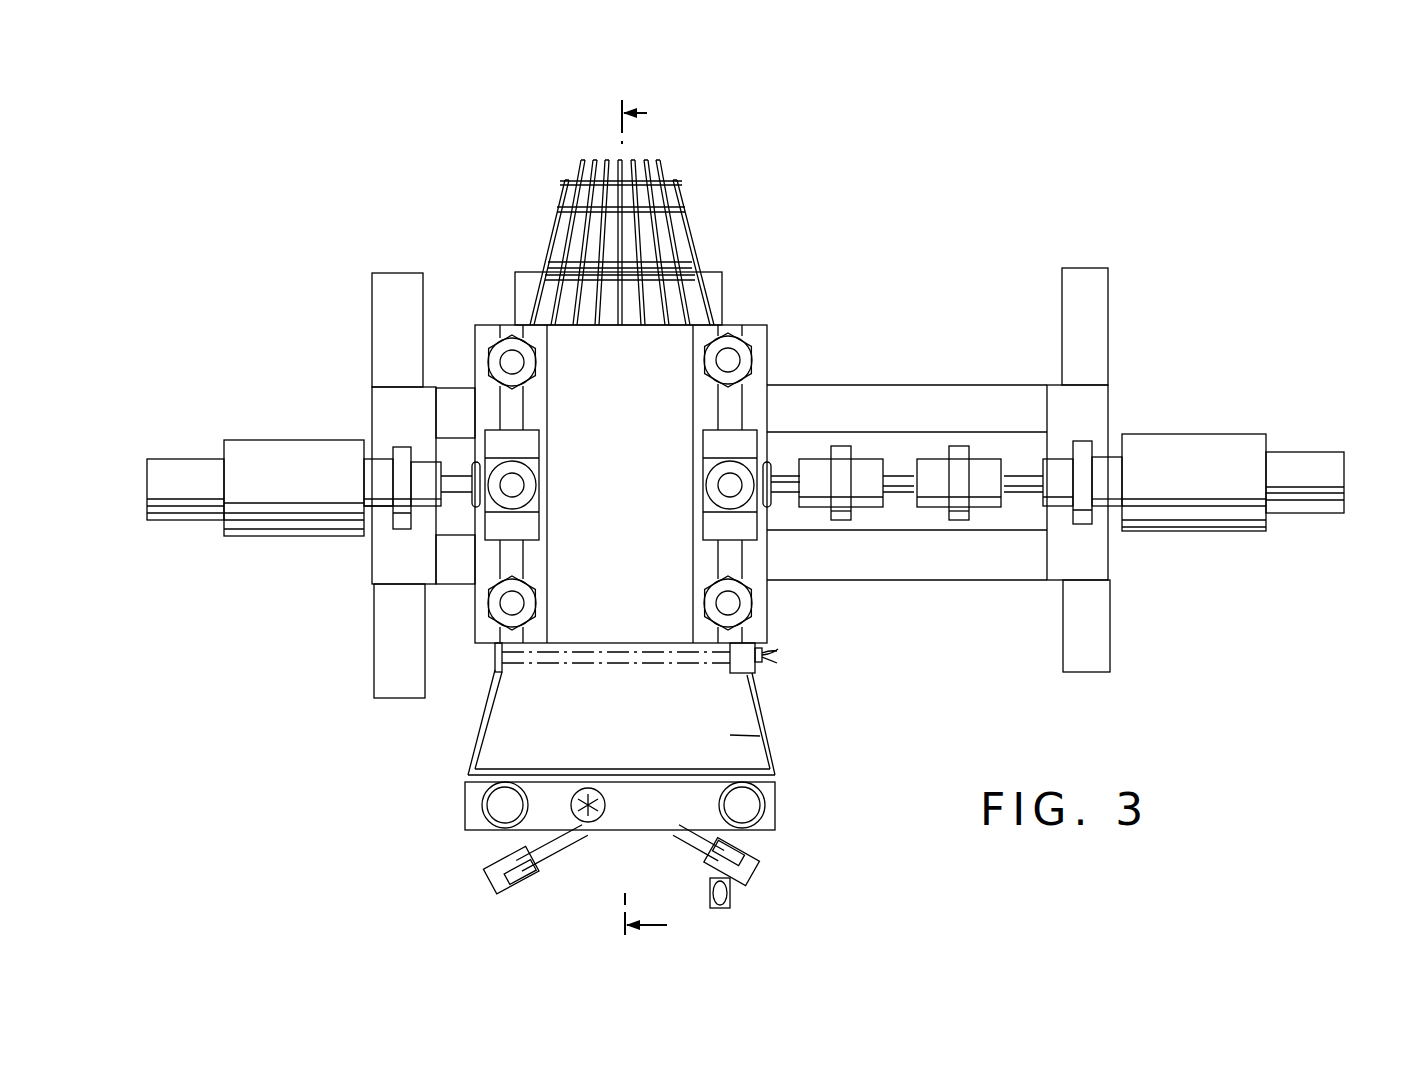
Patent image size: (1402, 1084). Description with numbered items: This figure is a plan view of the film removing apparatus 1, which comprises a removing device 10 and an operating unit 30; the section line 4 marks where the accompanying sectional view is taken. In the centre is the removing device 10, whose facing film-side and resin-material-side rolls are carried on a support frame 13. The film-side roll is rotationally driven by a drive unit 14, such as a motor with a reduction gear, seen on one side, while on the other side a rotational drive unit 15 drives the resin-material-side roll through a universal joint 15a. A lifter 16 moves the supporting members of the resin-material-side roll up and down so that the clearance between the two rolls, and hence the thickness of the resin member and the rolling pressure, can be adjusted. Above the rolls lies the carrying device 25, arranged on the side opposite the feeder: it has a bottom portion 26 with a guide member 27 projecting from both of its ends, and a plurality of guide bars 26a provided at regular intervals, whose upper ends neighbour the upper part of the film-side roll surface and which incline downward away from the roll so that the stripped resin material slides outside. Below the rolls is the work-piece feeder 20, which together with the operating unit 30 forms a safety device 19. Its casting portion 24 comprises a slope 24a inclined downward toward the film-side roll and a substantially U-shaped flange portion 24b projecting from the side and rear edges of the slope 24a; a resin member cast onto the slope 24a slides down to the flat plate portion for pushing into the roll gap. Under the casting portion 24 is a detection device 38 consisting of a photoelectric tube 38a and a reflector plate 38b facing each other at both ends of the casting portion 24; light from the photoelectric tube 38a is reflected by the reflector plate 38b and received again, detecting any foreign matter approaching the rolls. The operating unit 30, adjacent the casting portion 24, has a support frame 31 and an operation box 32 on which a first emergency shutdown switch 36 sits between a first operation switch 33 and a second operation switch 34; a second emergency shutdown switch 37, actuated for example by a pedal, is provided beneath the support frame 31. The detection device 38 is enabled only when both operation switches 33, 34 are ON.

The film removing apparatus 1 is at (824, 246).
The section line 4- 4 is at (644, 520).
The removing device 10 is at (780, 621).
The support frame 13 is at (990, 568).
The drive unit 14 is at (288, 440).
The rotational drive unit 15 is at (1188, 440).
The universal joint 15a is at (928, 462).
The lifter 16 is at (527, 487).
The safety device 19 is at (767, 689).
The work-piece feeder 20 is at (776, 731).
The casting portion 24 is at (756, 738).
The slope 24a is at (500, 730).
The flange portion 24b is at (470, 750).
The carrying device 25 is at (731, 205).
The bottom portion 26 is at (561, 147).
The guide bars 26a is at (580, 185).
The guide member 27 is at (547, 243).
The operating unit 30 is at (790, 806).
The support frame 31 is at (688, 843).
The operation box 32 is at (773, 818).
The first operation switch 33 is at (490, 811).
The second operation switch 34 is at (745, 812).
The first emergency shutdown switch 36 is at (613, 810).
The second emergency shutdown switch 37 is at (735, 902).
The detection device 38 is at (764, 660).
The photoelectric tube 38a is at (742, 670).
The reflector plate 38b is at (503, 668).